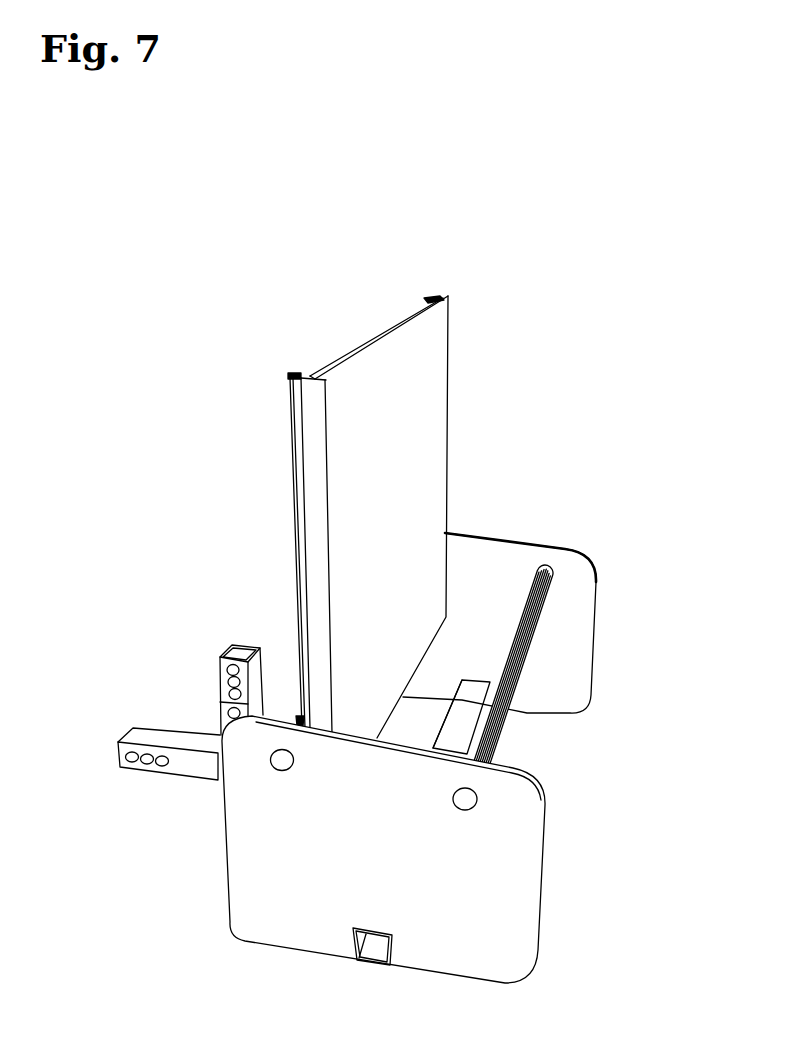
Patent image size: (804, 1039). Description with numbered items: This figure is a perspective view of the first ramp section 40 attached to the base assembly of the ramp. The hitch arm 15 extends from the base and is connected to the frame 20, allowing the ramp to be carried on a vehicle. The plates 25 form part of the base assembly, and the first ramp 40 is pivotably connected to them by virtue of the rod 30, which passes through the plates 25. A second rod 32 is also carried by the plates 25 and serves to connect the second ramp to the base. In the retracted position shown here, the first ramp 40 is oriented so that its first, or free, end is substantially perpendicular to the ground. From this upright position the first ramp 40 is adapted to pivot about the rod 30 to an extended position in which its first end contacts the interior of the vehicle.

The hitch arm 15 is at (155, 730).
The first ramp section 40 is at (411, 417).
The rod 32 is at (545, 575).
The frame 20 is at (463, 717).
The rod 30 is at (272, 765).
The plates 25 is at (375, 876).